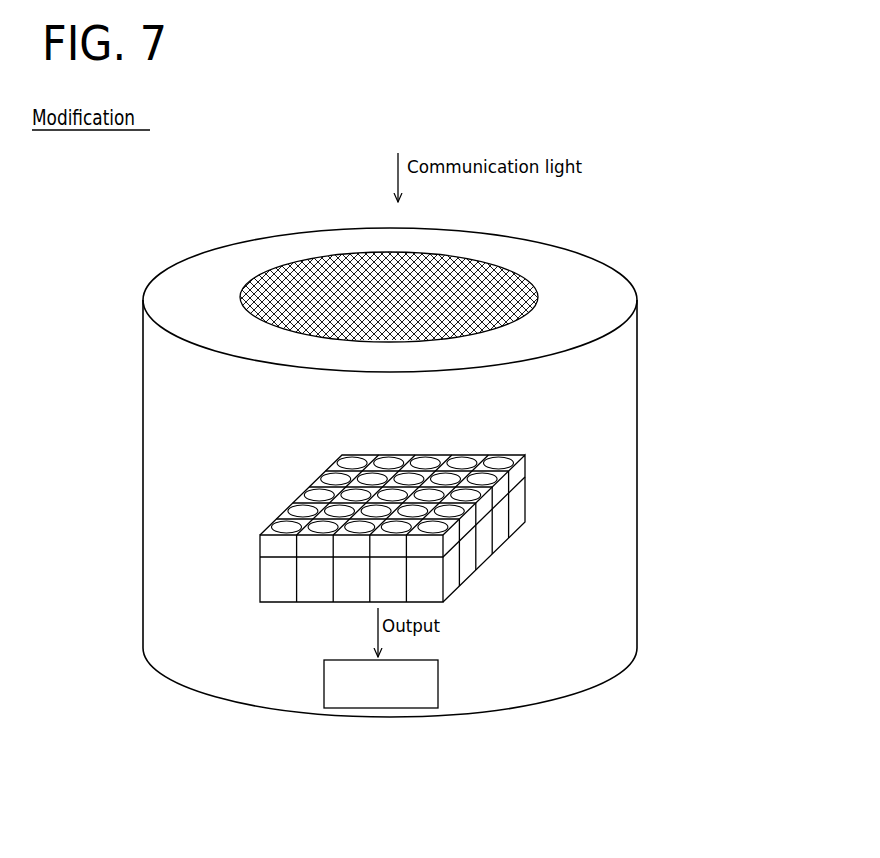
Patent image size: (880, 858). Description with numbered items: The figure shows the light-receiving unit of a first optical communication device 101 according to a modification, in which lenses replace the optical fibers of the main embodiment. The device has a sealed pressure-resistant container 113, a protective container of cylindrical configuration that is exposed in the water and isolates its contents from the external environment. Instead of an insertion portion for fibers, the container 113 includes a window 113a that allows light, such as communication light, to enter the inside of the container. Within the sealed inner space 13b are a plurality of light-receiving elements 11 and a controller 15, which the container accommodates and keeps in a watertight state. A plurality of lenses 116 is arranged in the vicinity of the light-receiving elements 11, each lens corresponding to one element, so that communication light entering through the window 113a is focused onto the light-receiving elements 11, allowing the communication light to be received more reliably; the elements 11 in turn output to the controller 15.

The first optical communication device 101 is at (83, 222).
The sealed pressure-resistant container 113 is at (639, 357).
The window 113a is at (542, 298).
The inner space 13b is at (594, 434).
The lenses 116 is at (520, 472).
The light-receiving elements 11 is at (520, 507).
The controller 15 is at (439, 686).